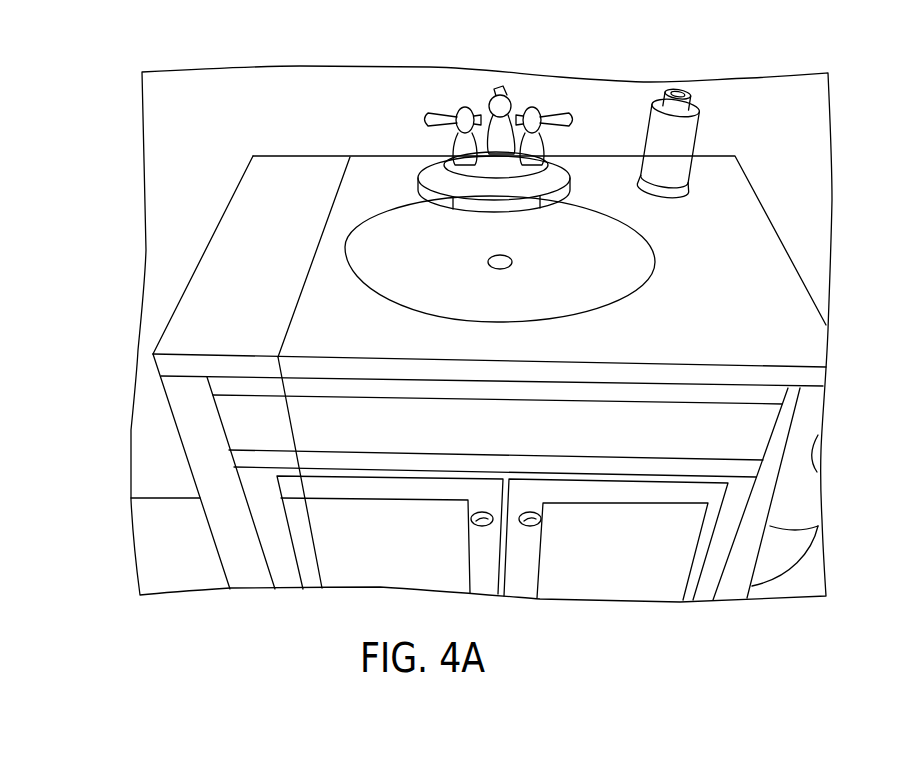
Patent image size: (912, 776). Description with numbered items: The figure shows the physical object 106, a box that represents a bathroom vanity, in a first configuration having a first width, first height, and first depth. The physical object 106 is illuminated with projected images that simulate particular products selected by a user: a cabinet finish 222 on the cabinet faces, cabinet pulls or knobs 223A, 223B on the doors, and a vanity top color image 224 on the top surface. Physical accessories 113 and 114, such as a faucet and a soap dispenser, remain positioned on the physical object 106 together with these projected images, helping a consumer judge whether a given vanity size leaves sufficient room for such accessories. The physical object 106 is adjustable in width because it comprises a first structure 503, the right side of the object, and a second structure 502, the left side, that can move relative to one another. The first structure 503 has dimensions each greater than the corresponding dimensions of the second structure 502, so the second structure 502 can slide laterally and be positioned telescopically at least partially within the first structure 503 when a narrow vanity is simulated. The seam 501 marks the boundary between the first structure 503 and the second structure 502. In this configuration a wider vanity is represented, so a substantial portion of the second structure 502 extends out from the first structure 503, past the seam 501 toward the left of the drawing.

The physical object 106 is at (94, 281).
The physical accessory 113 is at (502, 104).
The physical accessory 114 is at (677, 90).
The cabinet finish 222 is at (266, 508).
The cabinet pull or knob 223A is at (471, 524).
The cabinet pull or knob 223B is at (541, 524).
The vanity top color image 224 is at (767, 238).
The seam 501 is at (262, 372).
The second structure 502 is at (218, 250).
The first structure 503 is at (327, 307).